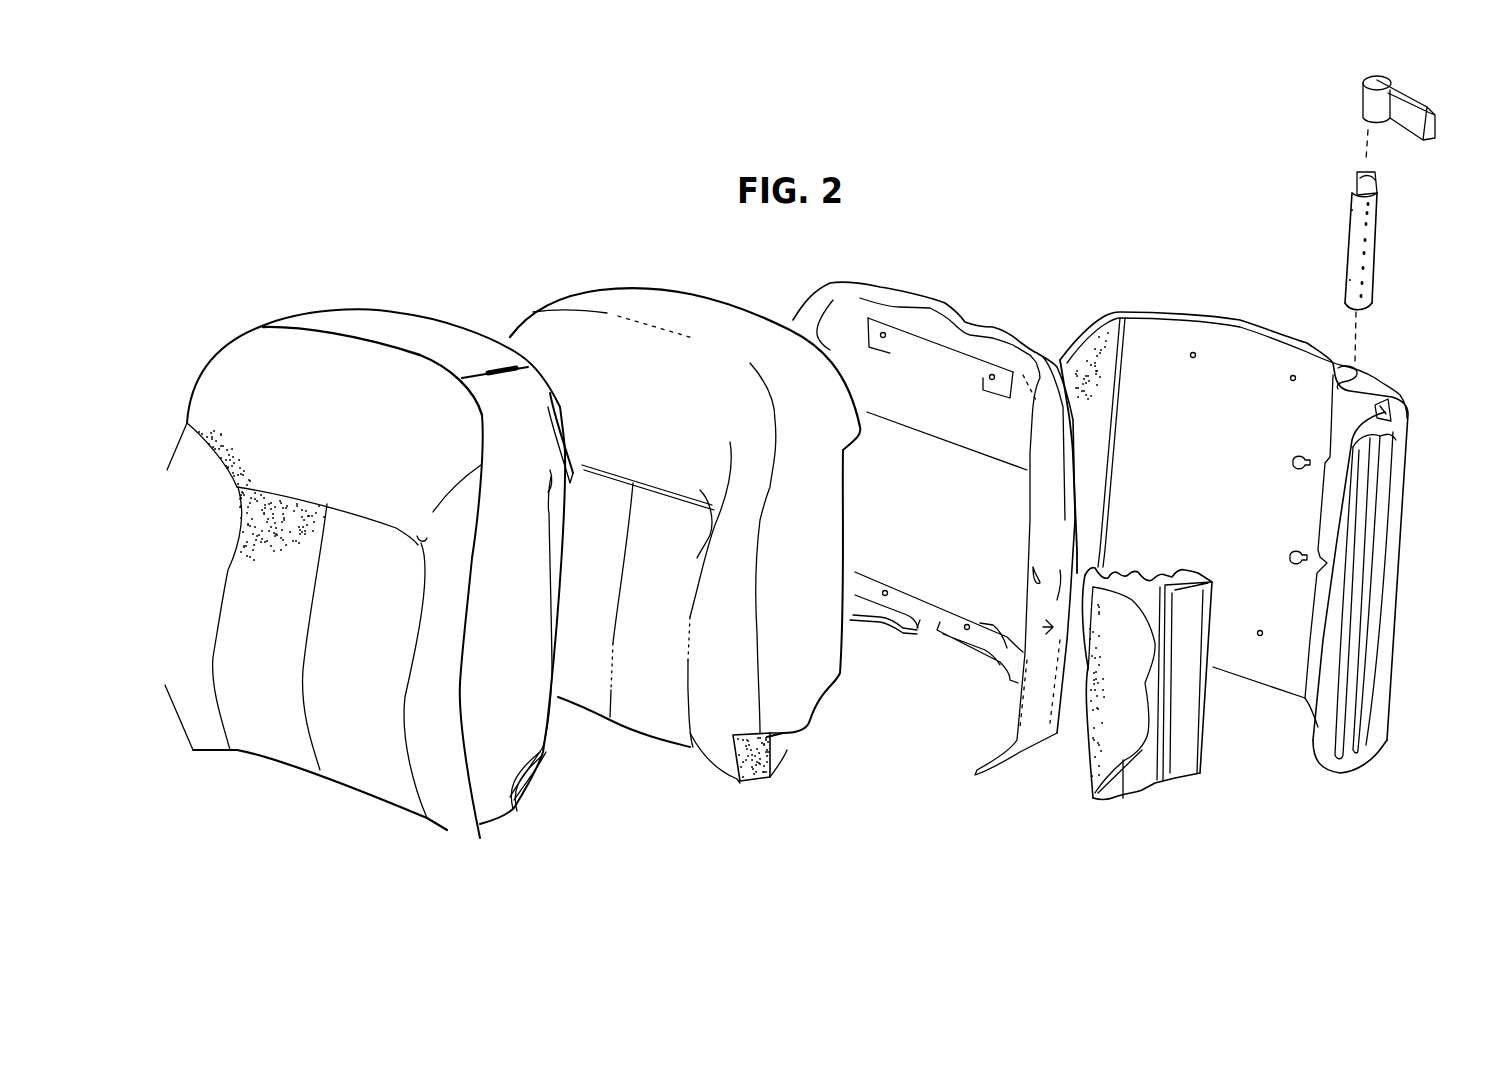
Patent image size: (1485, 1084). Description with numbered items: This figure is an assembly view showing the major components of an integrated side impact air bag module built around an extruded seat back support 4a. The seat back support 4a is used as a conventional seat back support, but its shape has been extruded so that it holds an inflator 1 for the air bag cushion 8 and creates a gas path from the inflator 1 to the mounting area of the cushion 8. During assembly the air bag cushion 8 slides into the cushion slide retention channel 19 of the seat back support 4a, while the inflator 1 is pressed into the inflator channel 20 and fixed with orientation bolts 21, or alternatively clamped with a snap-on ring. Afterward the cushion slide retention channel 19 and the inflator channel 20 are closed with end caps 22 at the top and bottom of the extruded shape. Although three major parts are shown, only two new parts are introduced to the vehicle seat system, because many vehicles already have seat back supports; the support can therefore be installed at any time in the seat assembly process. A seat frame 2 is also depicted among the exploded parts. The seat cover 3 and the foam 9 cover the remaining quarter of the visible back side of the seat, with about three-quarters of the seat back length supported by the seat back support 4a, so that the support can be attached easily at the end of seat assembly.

The inflator 1 is at (1348, 245).
The seat back frame 2 is at (882, 296).
The seat cover 3 is at (417, 337).
The seat back support 4a is at (1393, 375).
The air bag cushion 8 is at (1175, 770).
The foam 9 is at (697, 323).
The cushion slide retention channel 19 is at (1392, 419).
The inflator channel 20 is at (1357, 375).
The orientation bolts 21 is at (1293, 462).
The end caps 22 is at (1377, 103).